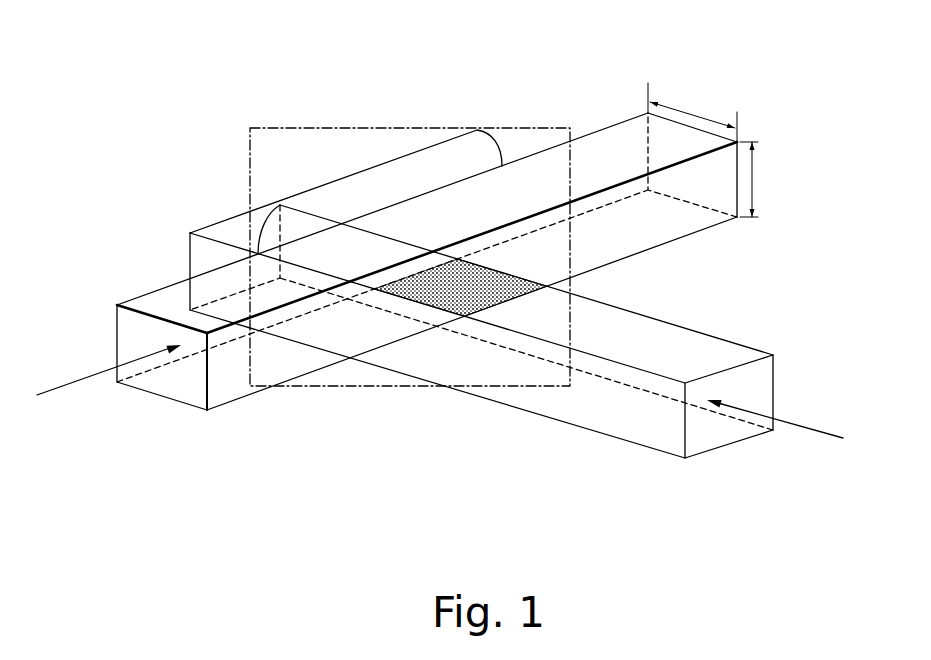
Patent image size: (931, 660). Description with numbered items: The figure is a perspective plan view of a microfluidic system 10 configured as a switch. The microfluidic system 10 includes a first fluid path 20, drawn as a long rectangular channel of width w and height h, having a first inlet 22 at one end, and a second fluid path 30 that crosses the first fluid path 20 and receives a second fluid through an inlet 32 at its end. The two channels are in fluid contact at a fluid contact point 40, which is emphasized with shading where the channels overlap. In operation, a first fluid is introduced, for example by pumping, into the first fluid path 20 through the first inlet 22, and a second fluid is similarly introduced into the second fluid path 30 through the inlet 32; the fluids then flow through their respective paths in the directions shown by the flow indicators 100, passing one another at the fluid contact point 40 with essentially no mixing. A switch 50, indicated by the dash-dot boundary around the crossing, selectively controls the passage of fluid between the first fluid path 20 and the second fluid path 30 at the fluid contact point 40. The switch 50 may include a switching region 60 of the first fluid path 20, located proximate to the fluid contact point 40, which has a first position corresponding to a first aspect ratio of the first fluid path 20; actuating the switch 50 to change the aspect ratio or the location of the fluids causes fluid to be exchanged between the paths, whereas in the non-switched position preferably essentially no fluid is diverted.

The microfluidic system 10 is at (160, 92).
The first fluid path 20 is at (594, 132).
The first inlet 22 is at (118, 335).
The second fluid path 30 is at (700, 334).
The inlet 32 is at (768, 381).
The fluid contact point 40 is at (447, 312).
The switch 50 is at (385, 388).
The switching region 60 is at (380, 167).
The flow indicators 100 is at (70, 382).